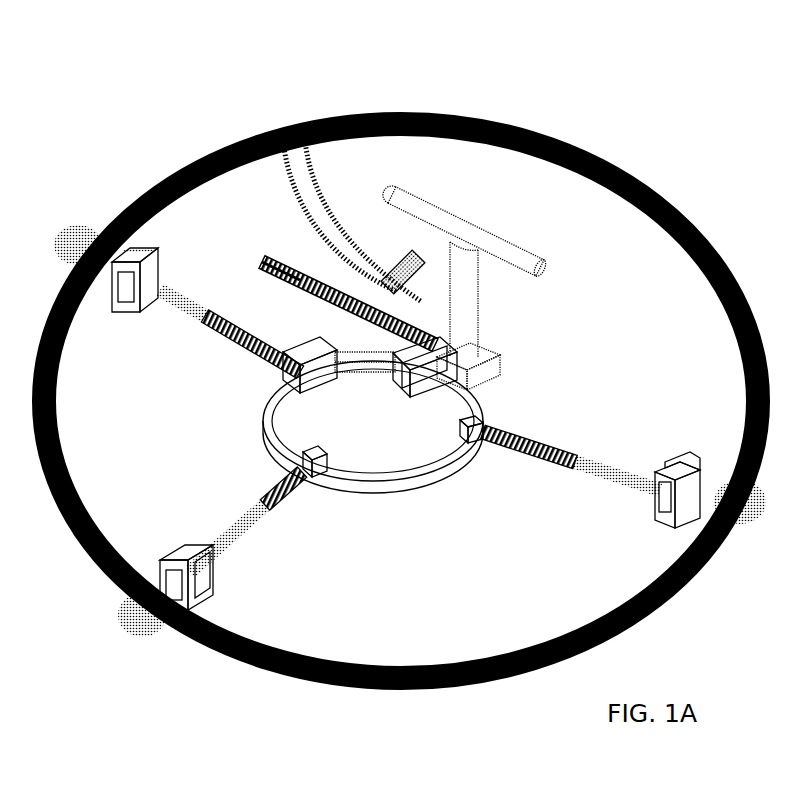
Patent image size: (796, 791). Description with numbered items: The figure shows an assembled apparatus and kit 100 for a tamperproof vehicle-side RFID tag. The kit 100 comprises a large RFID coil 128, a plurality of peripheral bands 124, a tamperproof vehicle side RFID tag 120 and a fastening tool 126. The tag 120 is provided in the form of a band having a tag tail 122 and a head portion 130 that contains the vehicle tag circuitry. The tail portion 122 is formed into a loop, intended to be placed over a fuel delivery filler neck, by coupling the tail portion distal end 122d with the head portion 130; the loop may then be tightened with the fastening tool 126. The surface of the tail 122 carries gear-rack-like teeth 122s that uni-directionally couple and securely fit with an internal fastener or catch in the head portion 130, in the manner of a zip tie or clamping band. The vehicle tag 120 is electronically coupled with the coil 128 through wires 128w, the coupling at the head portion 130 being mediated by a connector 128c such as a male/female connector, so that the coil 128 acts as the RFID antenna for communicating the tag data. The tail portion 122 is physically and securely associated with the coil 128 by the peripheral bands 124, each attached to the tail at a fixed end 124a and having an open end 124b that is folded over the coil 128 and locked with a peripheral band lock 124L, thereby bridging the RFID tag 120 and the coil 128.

The apparatus and kit 100 is at (77, 160).
The tamperproof vehicle side RFID tag 120 is at (556, 383).
The tag tail 122 is at (373, 456).
The tail portion distal end 122d is at (229, 258).
The teeth 122s is at (329, 304).
The peripheral band 124 is at (429, 430).
The peripheral band lock 124L is at (120, 317).
The fixed end 124a is at (321, 503).
The open end 124b is at (154, 636).
The fastening tool 126 is at (500, 316).
The coil 128 is at (405, 395).
The connector 128c is at (330, 221).
The wires 128w is at (440, 212).
The head portion 130 is at (413, 390).